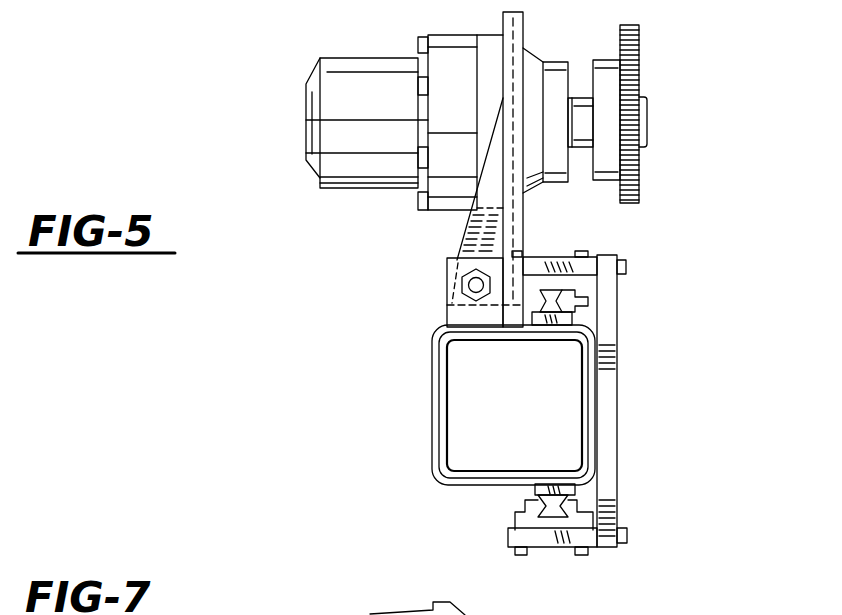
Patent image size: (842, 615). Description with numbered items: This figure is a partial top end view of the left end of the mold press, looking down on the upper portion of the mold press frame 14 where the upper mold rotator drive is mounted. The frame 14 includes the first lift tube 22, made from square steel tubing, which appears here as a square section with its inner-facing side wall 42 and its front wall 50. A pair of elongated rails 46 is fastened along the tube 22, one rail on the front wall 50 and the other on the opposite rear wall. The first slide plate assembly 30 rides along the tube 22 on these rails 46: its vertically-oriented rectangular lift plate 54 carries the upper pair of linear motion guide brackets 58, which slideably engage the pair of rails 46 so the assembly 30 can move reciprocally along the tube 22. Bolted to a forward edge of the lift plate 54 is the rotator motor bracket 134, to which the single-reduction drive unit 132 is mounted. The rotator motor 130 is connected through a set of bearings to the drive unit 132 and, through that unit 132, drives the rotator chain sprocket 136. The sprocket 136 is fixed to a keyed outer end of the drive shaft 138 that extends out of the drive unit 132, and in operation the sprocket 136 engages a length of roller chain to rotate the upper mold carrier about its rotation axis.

The mold press frame 14 is at (502, 435).
The first lift tube 22 is at (593, 432).
The first slide plate assembly 30 is at (588, 433).
The inner-facing side wall 42 is at (620, 403).
The elongated rails 46 is at (558, 283).
The front wall 50 is at (462, 486).
The lift plate 54 is at (610, 465).
The upper pair of linear motion guide brackets 58 is at (525, 304).
The rotator motor 130 is at (335, 90).
The single-reduction drive unit 132 is at (487, 62).
The rotator motor bracket 134 is at (510, 225).
The rotator chain sprocket 136 is at (638, 70).
The drive shaft 138 is at (648, 117).